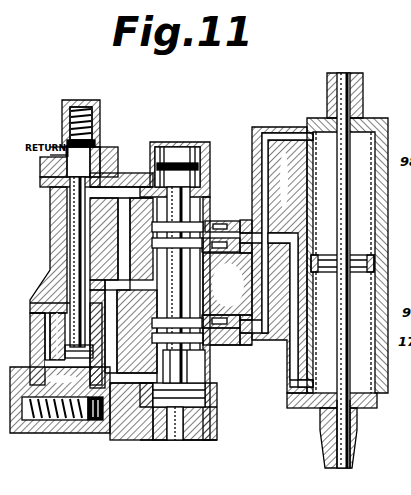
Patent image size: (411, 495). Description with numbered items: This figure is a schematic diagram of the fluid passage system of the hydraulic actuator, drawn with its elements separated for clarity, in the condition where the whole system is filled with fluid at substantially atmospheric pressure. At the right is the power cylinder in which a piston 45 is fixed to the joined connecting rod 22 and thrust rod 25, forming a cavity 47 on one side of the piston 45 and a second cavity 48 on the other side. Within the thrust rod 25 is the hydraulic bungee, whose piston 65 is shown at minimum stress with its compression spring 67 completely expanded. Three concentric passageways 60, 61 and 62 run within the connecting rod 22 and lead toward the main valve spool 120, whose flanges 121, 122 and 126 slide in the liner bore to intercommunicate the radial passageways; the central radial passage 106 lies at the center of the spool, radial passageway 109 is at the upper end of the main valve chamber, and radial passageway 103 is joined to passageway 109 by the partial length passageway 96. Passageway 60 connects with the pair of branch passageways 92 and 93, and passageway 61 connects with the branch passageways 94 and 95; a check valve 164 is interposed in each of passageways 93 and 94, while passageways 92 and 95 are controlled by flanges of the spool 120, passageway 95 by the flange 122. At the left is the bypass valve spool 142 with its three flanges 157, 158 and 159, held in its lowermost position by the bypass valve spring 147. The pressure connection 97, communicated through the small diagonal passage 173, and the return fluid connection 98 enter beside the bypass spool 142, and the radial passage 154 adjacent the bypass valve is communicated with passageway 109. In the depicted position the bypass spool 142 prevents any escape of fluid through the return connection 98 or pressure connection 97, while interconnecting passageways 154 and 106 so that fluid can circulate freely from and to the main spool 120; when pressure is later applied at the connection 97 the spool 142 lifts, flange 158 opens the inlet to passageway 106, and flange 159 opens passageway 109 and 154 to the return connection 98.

The connecting rod 22 is at (352, 446).
The thrust rod 25 is at (356, 80).
The piston 45 is at (325, 252).
The cavity 47 is at (321, 385).
The cavity 48 is at (325, 145).
The passageway 60 is at (288, 383).
The passageway 61 is at (262, 163).
The passageway 62 is at (108, 395).
The bungee piston 65 is at (97, 421).
The compression spring 67 is at (60, 421).
The partial length passageway 92 is at (227, 229).
The partial length passageway 93 is at (210, 236).
The partial length passageway 94 is at (247, 324).
The partial length passageway 95 is at (237, 341).
The partial length passageway 96 is at (119, 256).
The pressure connection 97 is at (43, 312).
The return fluid connection 98 is at (50, 157).
The radial passageway 103 is at (131, 338).
The central radial passage 106 is at (127, 285).
The radial passageway 109 is at (106, 186).
The main valve spool 120 is at (177, 441).
The spool flange 121 is at (210, 400).
The spool flange 122 is at (177, 282).
The spool flange 126 is at (186, 147).
The bypass valve spool 142 is at (68, 222).
The bypass valve spring 147 is at (101, 109).
The radial passage 154 is at (108, 167).
The flange 157 is at (38, 377).
The flange 158 is at (55, 282).
The flange 159 is at (50, 182).
The check valve 164 is at (223, 315).
The diagonal passage 173 is at (45, 340).